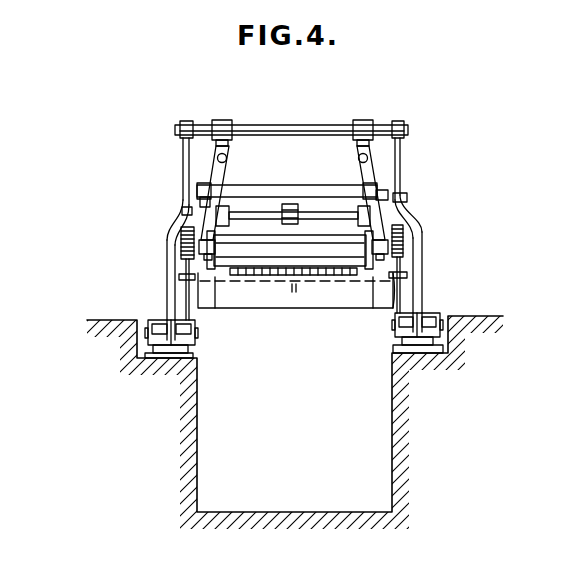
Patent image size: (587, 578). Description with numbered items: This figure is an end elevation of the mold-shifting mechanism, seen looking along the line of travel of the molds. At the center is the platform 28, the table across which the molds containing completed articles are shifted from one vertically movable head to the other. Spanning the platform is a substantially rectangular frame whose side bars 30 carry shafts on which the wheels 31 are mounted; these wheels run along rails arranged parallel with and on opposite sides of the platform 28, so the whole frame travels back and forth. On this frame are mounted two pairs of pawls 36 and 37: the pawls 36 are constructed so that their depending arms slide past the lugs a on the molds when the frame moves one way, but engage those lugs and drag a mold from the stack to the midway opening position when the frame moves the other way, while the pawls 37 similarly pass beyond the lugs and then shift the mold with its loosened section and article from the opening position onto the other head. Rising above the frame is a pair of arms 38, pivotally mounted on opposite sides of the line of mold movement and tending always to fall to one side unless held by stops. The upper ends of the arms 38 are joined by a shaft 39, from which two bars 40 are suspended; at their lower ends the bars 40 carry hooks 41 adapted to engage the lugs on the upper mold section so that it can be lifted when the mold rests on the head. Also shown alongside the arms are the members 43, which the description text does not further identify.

The platform 28 is at (272, 283).
The side bars 30 is at (182, 212).
The wheels 31 is at (181, 243).
The pawls 36 is at (375, 308).
The pawls 37 is at (288, 203).
The arms 38 is at (167, 288).
The shaft 39 is at (296, 126).
The bars 40 is at (219, 176).
The hooks 41 is at (440, 288).
The cross bar 43 is at (200, 192).
The roller a is at (360, 241).